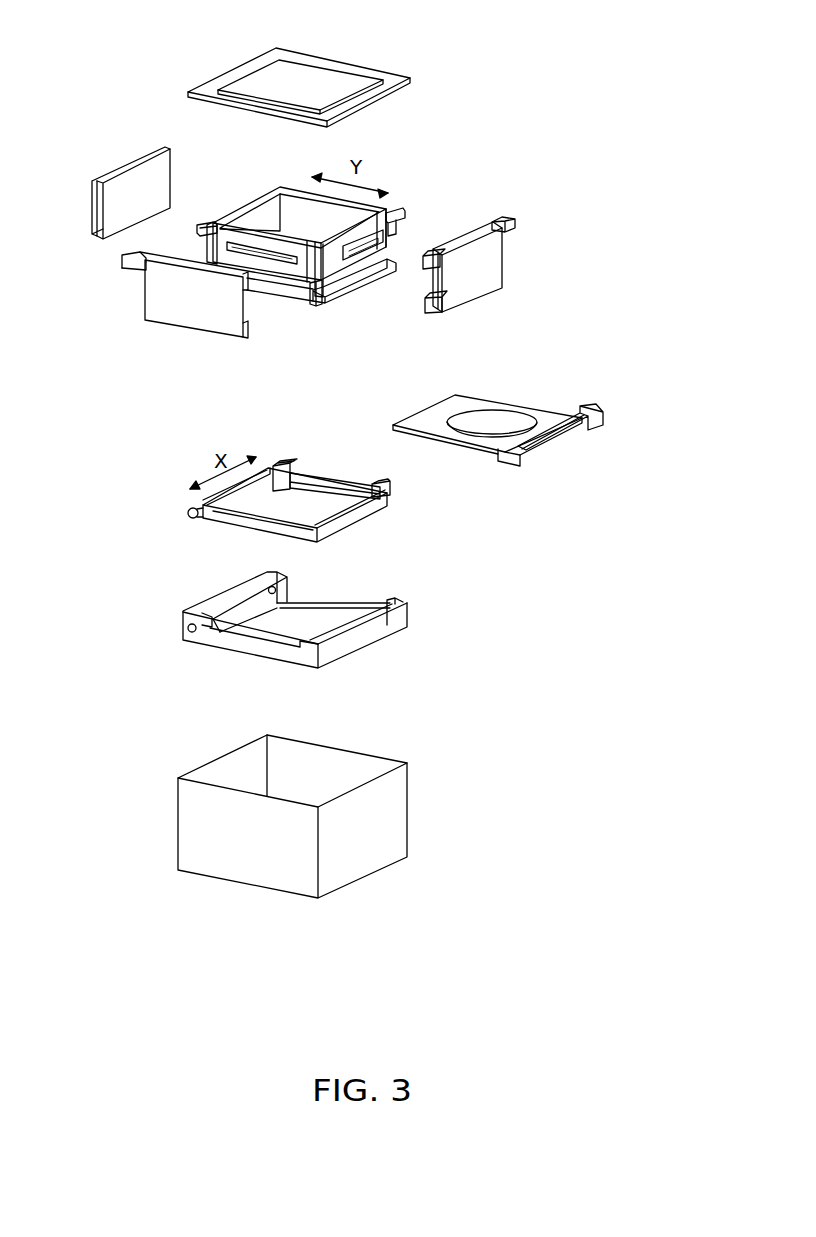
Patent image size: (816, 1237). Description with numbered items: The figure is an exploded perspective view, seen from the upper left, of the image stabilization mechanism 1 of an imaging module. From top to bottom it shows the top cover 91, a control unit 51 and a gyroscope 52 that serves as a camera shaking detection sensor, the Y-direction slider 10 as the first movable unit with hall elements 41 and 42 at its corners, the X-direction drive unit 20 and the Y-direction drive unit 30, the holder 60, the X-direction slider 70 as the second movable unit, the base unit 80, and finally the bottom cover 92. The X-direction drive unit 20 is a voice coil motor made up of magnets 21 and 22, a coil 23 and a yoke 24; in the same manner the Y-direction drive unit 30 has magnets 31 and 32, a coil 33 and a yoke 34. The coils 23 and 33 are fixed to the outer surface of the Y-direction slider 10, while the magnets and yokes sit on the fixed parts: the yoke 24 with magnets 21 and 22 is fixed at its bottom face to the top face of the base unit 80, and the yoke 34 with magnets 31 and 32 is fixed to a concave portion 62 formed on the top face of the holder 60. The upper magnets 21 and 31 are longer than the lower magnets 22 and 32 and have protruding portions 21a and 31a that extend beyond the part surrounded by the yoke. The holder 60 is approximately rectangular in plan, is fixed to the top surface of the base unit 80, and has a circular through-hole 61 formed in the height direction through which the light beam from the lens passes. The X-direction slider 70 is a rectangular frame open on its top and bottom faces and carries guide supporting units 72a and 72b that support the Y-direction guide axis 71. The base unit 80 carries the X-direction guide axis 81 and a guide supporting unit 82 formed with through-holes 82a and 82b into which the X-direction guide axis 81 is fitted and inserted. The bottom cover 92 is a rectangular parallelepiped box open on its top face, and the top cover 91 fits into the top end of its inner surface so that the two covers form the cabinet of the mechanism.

The image stabilization mechanism 1 is at (103, 60).
The top cover 91 is at (410, 82).
The control unit 51 is at (133, 194).
The gyroscope 52 is at (128, 160).
The Y-direction slider 10 is at (268, 192).
The hall element 41 is at (205, 222).
The hall element 42 is at (400, 214).
The coil 33 is at (366, 258).
The X-direction drive unit 20 is at (224, 333).
The magnet 21 is at (262, 292).
The protruding portion 21a is at (130, 268).
The magnet 22 is at (261, 323).
The coil 23 is at (313, 305).
The yoke 24 is at (218, 326).
The Y-direction drive unit 30 is at (473, 280).
The magnet 31 is at (427, 262).
The protruding portion 31a is at (510, 220).
The magnet 32 is at (450, 334).
The yoke 34 is at (467, 293).
The holder 60 is at (506, 424).
The through-hole 61 is at (488, 432).
The concave portion 62 is at (575, 441).
The X-direction slider 70 is at (280, 491).
The Y-direction guide axis 71 is at (331, 475).
The guide supporting unit 72a is at (286, 463).
The guide supporting unit 72b is at (390, 485).
The X-direction guide axis 81 is at (188, 516).
The base unit 80 is at (319, 622).
The guide supporting unit 82 is at (200, 602).
The through-hole 82a is at (192, 634).
The through-hole 82b is at (280, 590).
The bottom cover 92 is at (400, 810).